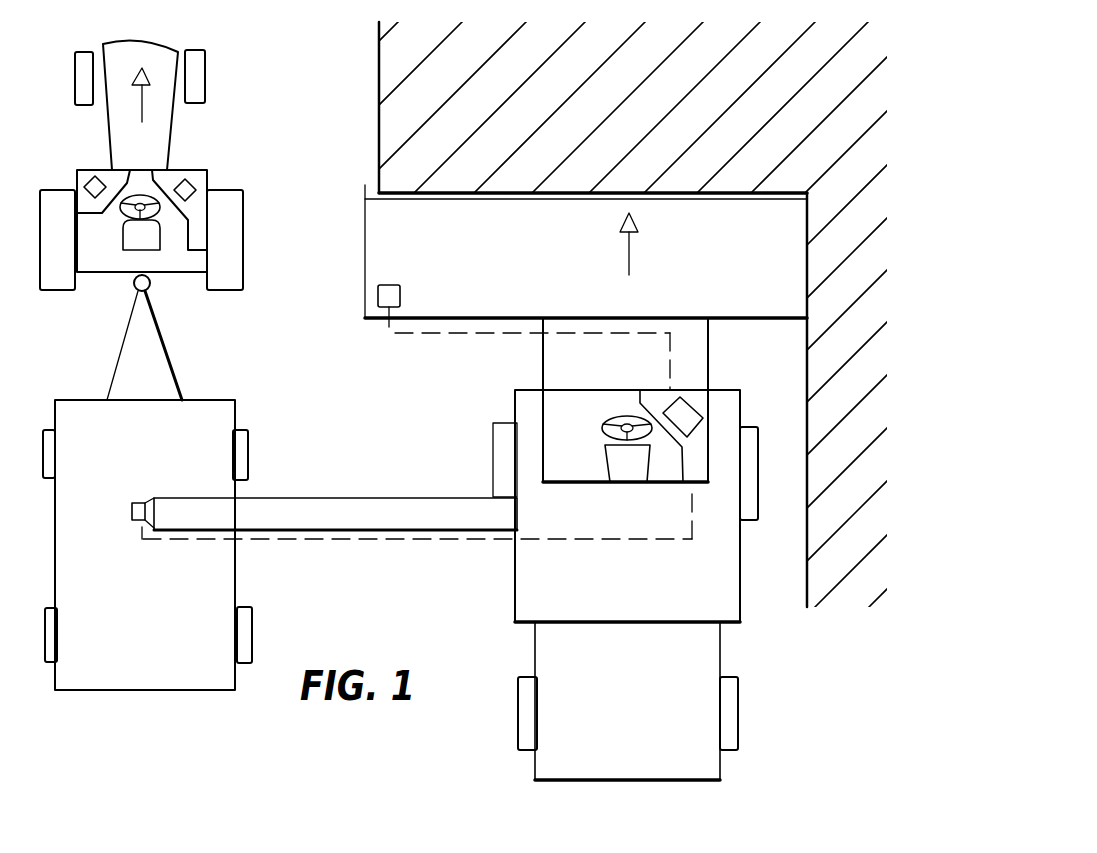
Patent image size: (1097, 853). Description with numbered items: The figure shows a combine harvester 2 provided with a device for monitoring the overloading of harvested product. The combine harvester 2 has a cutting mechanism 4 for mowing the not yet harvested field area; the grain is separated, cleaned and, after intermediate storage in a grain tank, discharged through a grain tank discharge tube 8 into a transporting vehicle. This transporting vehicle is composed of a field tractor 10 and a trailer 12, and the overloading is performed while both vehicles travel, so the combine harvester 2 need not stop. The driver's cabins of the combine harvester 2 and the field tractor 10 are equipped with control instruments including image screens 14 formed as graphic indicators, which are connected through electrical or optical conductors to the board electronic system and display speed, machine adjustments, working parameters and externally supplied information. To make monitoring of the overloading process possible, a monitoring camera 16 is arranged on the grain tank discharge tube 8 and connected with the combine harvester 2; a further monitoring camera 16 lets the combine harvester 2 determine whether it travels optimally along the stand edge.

The combine harvester 2 is at (748, 580).
The cutting mechanism 4 is at (763, 306).
The grain tank discharge tube 8 is at (424, 502).
The field tractor 10 is at (196, 141).
The trailer 12 is at (238, 393).
The image screen 14 is at (92, 180).
The monitoring camera 16 is at (135, 508).